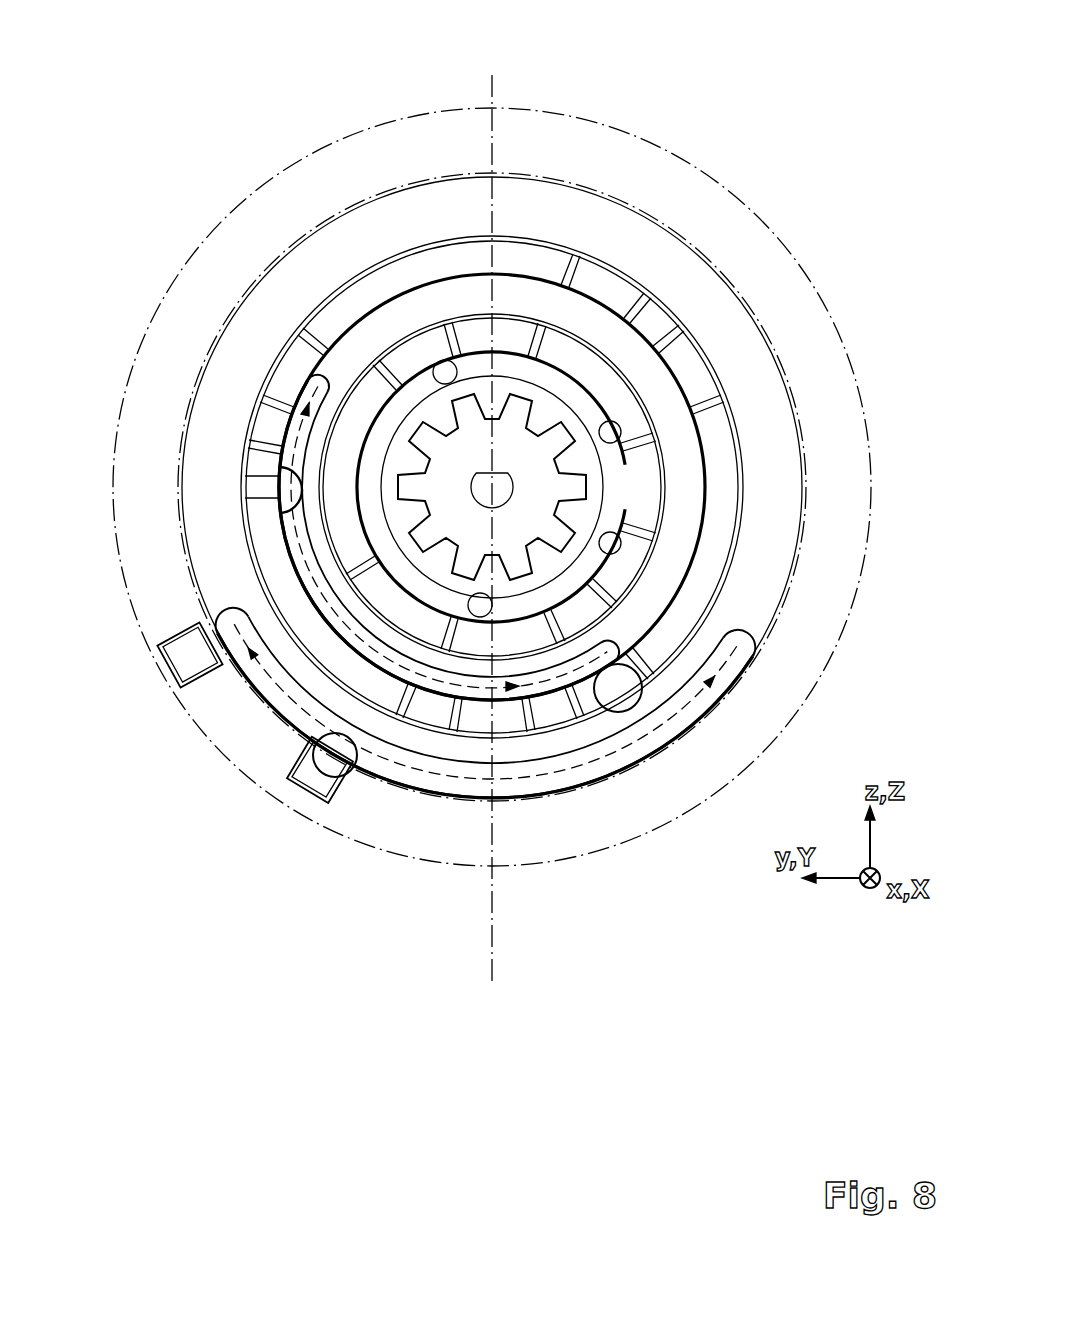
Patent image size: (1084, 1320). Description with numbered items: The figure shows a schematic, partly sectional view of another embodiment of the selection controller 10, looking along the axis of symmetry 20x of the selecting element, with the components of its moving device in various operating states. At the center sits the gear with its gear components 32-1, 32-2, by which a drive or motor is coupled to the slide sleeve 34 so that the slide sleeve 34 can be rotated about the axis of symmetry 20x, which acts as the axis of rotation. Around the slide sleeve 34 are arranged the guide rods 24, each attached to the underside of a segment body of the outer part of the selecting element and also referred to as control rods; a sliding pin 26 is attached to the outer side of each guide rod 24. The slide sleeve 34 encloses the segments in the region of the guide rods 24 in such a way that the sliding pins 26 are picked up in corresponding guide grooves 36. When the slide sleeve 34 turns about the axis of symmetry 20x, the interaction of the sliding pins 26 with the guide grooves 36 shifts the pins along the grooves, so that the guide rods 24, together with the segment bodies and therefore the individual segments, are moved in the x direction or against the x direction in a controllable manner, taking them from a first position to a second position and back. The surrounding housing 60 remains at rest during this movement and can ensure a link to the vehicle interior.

The selection controller 10 is at (196, 91).
The axis of symmetry 20x is at (494, 945).
The guide rod 24 is at (603, 282).
The sliding pin 26 is at (265, 495).
The gear component 32-1 is at (440, 395).
The gear component 32-2 is at (548, 390).
The slide sleeve 34 is at (453, 200).
The guide groove 36 is at (410, 690).
The housing 60 is at (655, 170).